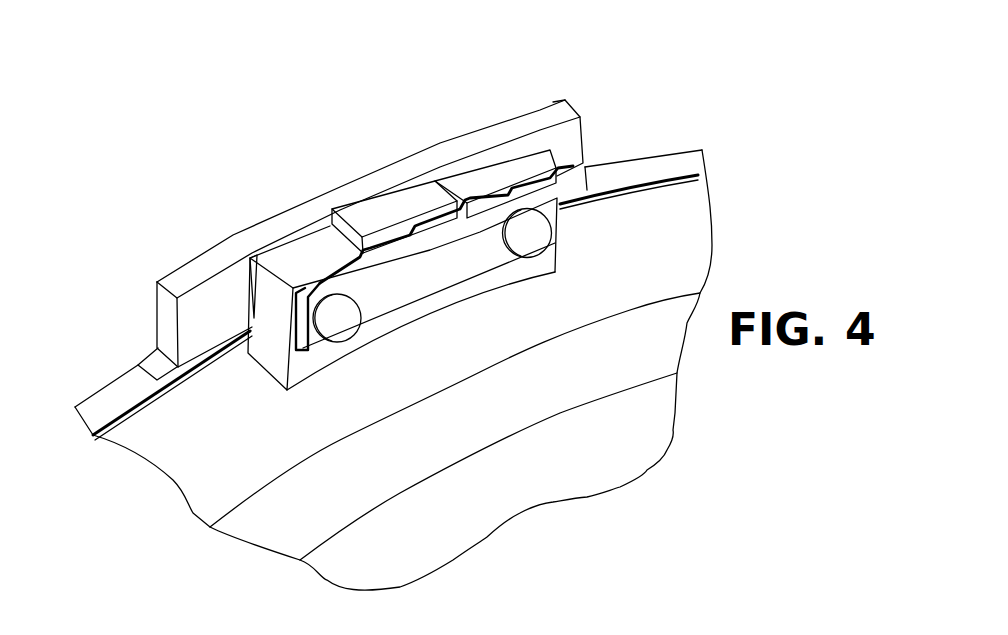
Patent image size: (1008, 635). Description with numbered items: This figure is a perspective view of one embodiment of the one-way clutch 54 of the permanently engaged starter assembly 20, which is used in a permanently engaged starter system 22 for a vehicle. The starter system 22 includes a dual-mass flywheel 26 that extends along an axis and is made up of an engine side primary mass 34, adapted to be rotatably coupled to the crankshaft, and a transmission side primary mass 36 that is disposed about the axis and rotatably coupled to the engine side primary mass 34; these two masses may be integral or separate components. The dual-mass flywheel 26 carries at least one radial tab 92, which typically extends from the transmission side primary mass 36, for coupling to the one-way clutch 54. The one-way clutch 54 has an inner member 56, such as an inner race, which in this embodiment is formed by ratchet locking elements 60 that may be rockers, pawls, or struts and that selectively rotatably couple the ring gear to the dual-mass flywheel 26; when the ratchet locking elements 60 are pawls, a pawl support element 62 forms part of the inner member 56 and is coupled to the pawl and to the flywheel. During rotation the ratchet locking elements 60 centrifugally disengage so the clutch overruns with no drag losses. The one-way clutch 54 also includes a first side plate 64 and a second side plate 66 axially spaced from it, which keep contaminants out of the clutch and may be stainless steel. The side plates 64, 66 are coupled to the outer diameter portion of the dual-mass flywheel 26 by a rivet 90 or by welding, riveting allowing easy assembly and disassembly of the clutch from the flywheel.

The permanently engaged starter assembly 20 is at (170, 98).
The permanently engaged starter system 22 is at (94, 102).
The dual-mass flywheel 26 is at (623, 178).
The engine side primary mass 34 is at (682, 233).
The transmission side primary mass 36 is at (675, 165).
The one-way clutch 54 is at (518, 160).
The inner member 56 is at (400, 175).
The ratchet locking elements 60 is at (375, 210).
The pawl support element 62 is at (463, 170).
The first side plate 64 is at (248, 267).
The second side plate 66 is at (430, 280).
The rivet 90 is at (337, 318).
The radial tab 92 is at (195, 270).